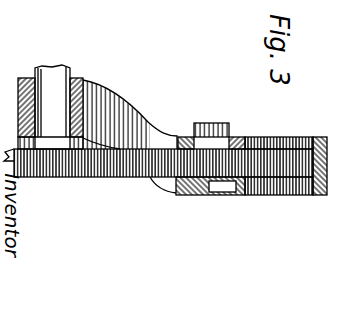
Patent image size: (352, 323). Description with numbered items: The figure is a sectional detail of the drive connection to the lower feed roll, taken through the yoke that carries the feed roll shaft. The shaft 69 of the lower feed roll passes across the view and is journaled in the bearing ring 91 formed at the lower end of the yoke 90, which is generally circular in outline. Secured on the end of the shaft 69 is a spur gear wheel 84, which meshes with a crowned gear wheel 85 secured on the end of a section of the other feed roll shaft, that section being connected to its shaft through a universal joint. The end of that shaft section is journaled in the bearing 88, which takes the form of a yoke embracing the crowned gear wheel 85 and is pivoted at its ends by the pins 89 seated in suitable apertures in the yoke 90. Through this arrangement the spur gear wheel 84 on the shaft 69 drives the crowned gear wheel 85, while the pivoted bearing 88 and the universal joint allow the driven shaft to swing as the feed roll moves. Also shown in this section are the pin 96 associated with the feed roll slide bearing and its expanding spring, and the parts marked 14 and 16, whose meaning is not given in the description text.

The center line 14 is at (196, 217).
The cam 16 is at (90, 83).
The shaft of the lower feed roll 69 is at (62, 78).
The spur gear wheel 84 is at (82, 177).
The crowned gear wheel 85 is at (276, 195).
The bearing 88 is at (244, 195).
The pins 89 is at (296, 74).
The yoke 90 is at (211, 133).
The bearing ring 91 is at (209, 115).
The pin 96 is at (326, 180).